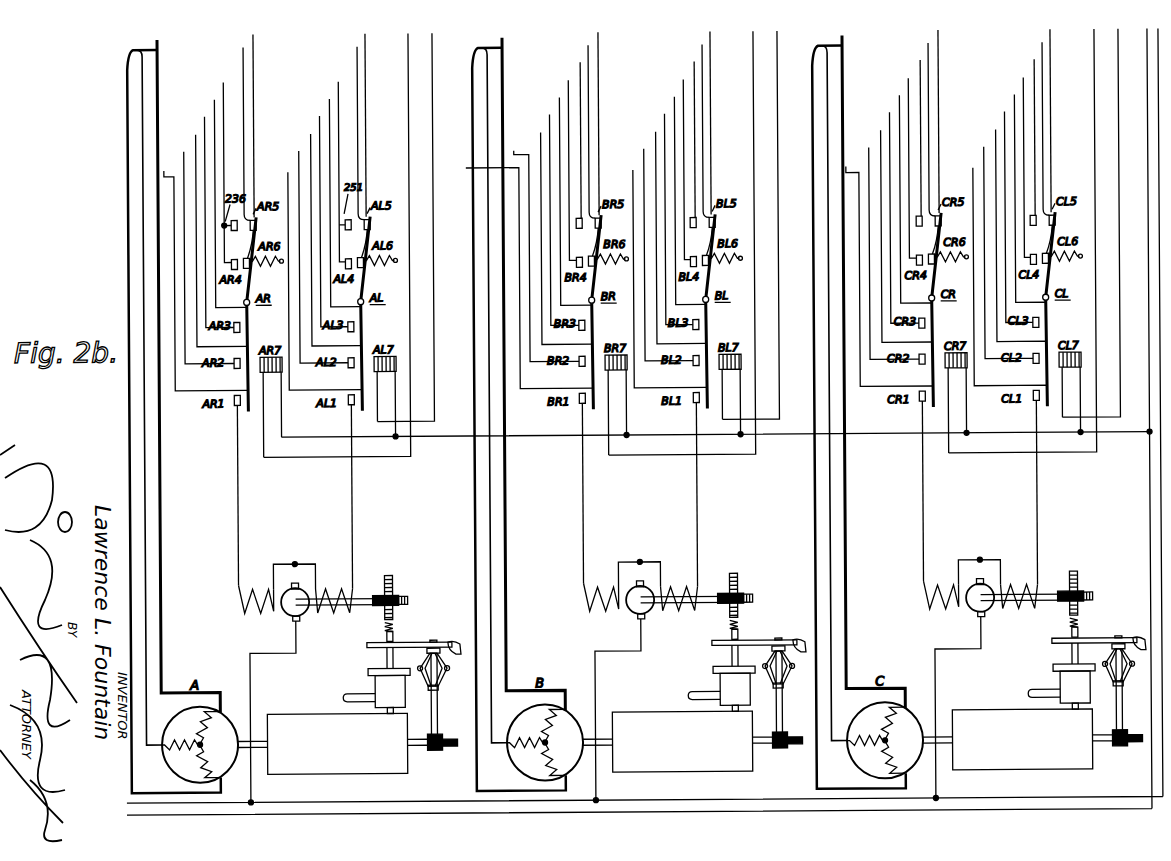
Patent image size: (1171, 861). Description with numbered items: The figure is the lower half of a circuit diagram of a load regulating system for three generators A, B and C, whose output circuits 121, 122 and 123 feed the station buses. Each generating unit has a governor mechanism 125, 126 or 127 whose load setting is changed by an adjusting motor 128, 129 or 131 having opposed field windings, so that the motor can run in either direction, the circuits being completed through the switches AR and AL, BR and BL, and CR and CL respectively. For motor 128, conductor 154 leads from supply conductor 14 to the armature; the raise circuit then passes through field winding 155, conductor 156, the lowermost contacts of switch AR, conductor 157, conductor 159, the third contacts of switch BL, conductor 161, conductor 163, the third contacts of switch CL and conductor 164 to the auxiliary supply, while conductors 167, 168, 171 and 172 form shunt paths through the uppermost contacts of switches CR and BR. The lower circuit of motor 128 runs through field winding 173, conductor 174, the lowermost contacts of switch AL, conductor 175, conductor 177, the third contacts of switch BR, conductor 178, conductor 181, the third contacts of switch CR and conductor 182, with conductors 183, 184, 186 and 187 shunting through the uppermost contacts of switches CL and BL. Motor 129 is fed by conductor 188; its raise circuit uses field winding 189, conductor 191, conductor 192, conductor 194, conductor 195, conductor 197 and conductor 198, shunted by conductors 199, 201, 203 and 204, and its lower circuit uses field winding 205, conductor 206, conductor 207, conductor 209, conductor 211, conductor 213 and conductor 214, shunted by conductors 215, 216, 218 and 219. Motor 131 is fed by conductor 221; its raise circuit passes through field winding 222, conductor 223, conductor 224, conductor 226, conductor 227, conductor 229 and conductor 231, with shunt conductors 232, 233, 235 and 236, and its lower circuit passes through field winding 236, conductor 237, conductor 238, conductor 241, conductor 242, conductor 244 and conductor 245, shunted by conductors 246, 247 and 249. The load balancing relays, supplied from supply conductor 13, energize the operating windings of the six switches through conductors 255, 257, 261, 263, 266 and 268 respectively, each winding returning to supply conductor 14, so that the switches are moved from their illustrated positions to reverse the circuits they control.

The supply conductor 13 is at (1147, 48).
The supply conductor 14 is at (292, 440).
The output circuit 121 is at (144, 634).
The output circuit 122 is at (507, 414).
The output circuit 123 is at (847, 412).
The governor mechanism 125 is at (363, 674).
The governor mechanism 126 is at (712, 672).
The governor mechanism 127 is at (1053, 670).
The adjusting motor 128 is at (302, 562).
The adjusting motor 129 is at (674, 581).
The adjusting motor 131 is at (1015, 577).
The conductor 154 is at (251, 676).
The field winding 155 is at (236, 597).
The conductor 156 is at (240, 508).
The conductor 157 is at (170, 396).
The field winding 173 is at (352, 592).
The conductor 174 is at (350, 506).
The conductor 175 is at (287, 173).
The conductor 188 is at (617, 711).
The field winding 189 is at (585, 597).
The conductor 191 is at (600, 493).
The conductor 192 is at (517, 274).
The field winding 205 is at (703, 582).
The conductor 206 is at (712, 494).
The conductor 207 is at (654, 275).
The conductor 221 is at (957, 709).
The field winding 222 is at (925, 595).
The conductor 223 is at (940, 491).
The conductor 224 is at (889, 269).
The field winding 236 is at (1045, 578).
The conductor 237 is at (1052, 492).
The conductor 238 is at (994, 273).
The conductor 203 is at (253, 35).
The conductor 235 is at (243, 48).
The conductor 204 is at (223, 83).
The conductor 242 is at (214, 100).
The conductor 241 is at (204, 117).
The conductor 211 is at (195, 135).
The conductor 209 is at (196, 254).
The conductor 218 is at (365, 35).
The conductor 249 is at (357, 48).
The conductor 219 is at (338, 83).
The conductor 195 is at (329, 100).
The conductor 194 is at (319, 117).
The conductor 226 is at (310, 135).
The conductor 227 is at (298, 152).
The conductor 255 is at (408, 50).
The conductor 257 is at (432, 41).
The conductor 171 is at (582, 120).
The conductor 232 is at (575, 128).
The conductor 172 is at (564, 136).
The conductor 233 is at (556, 166).
The conductor 178 is at (559, 197).
The conductor 177 is at (548, 216).
The conductor 244 is at (550, 235).
The conductor 245 is at (542, 249).
The conductor 186 is at (694, 119).
The conductor 246 is at (689, 127).
The conductor 187 is at (678, 136).
The conductor 247 is at (670, 166).
The conductor 159 is at (673, 196).
The conductor 161 is at (663, 216).
The conductor 231 is at (665, 234).
The conductor 229 is at (652, 252).
The conductor 261 is at (681, 243).
The conductor 263 is at (767, 221).
The conductor 168 is at (922, 118).
The conductor 199 is at (915, 126).
The conductor 167 is at (904, 134).
The conductor 201 is at (896, 164).
The conductor 182 is at (899, 195).
The conductor 181 is at (888, 214).
The conductor 214 is at (890, 233).
The conductor 213 is at (881, 249).
The conductor 184 is at (1034, 117).
The conductor 215 is at (1029, 125).
The conductor 183 is at (1018, 133).
The conductor 216 is at (1010, 163).
The conductor 164 is at (1013, 194).
The conductor 163 is at (1003, 213).
The conductor 198 is at (1005, 232).
The conductor 197 is at (992, 249).
The conductor 266 is at (1021, 241).
The conductor 268 is at (1092, 219).